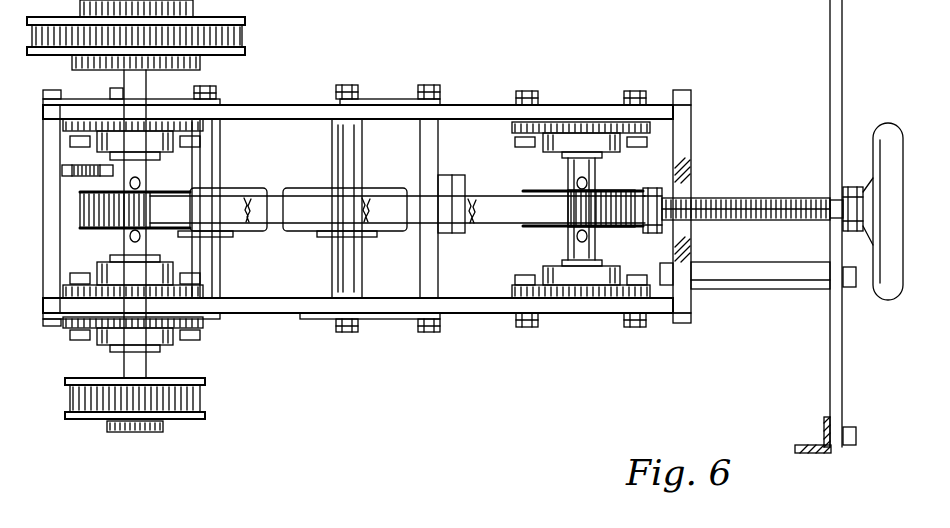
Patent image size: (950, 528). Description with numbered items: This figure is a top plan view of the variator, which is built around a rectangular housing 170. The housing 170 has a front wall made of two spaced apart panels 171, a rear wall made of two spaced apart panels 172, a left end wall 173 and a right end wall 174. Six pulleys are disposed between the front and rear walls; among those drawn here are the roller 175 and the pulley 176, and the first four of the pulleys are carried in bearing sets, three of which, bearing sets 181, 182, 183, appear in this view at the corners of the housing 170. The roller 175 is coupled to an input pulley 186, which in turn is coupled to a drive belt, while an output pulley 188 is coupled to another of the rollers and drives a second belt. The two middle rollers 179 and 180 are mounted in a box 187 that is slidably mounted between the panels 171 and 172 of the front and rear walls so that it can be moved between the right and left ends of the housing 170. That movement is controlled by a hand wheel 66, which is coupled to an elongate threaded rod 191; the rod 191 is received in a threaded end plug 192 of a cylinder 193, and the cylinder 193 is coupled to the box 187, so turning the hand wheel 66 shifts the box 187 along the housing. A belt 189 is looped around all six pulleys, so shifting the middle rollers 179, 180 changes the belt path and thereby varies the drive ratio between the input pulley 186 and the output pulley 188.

The handwheel 66 is at (890, 123).
The rectangular housing 170 is at (468, 100).
The front wall panels 171 is at (492, 313).
The rear wall panels 172 is at (563, 107).
The left end wall 173 is at (47, 298).
The right end wall 174 is at (688, 139).
The pulley 175 is at (108, 234).
The pulley 176 is at (633, 228).
The pulley 179 is at (229, 191).
The pulley 180 is at (369, 190).
The bearing set 181 is at (164, 155).
The bearing set 182 is at (563, 157).
The bearing set 183 is at (172, 342).
The input pulley 186 is at (240, 33).
The box 187 is at (383, 100).
The output pulley 188 is at (204, 401).
The belt 189 is at (278, 231).
The elongate threaded rod 191 is at (787, 172).
The threaded end plug 192 is at (660, 189).
The cylinder 193 is at (477, 190).